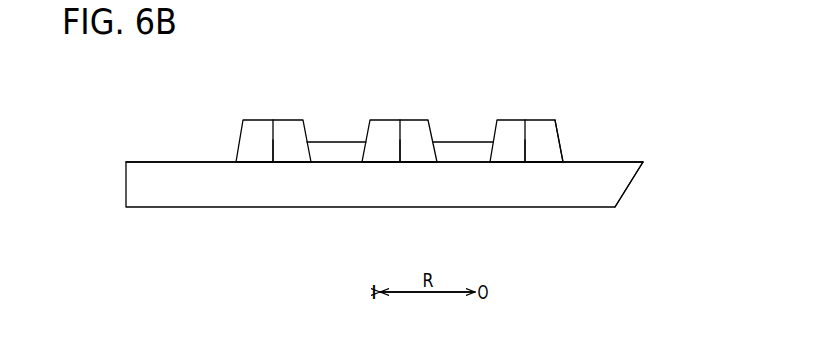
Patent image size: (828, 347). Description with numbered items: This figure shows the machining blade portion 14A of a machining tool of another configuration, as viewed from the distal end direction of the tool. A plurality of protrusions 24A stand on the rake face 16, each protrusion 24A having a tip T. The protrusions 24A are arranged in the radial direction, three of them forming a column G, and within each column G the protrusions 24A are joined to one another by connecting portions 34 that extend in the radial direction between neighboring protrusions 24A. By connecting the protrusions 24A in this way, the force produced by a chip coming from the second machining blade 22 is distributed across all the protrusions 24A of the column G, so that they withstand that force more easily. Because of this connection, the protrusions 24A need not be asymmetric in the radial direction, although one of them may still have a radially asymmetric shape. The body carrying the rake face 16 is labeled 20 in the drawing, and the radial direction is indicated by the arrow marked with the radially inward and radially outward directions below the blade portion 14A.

The machining blade portion 14A is at (148, 151).
The rake face 16 is at (200, 161).
The substrate 20 is at (177, 162).
The second machining blade 22 is at (645, 162).
The protrusion 24A is at (262, 115).
The connecting portion 34 is at (330, 150).
The tip T is at (273, 148).
The column G is at (566, 137).